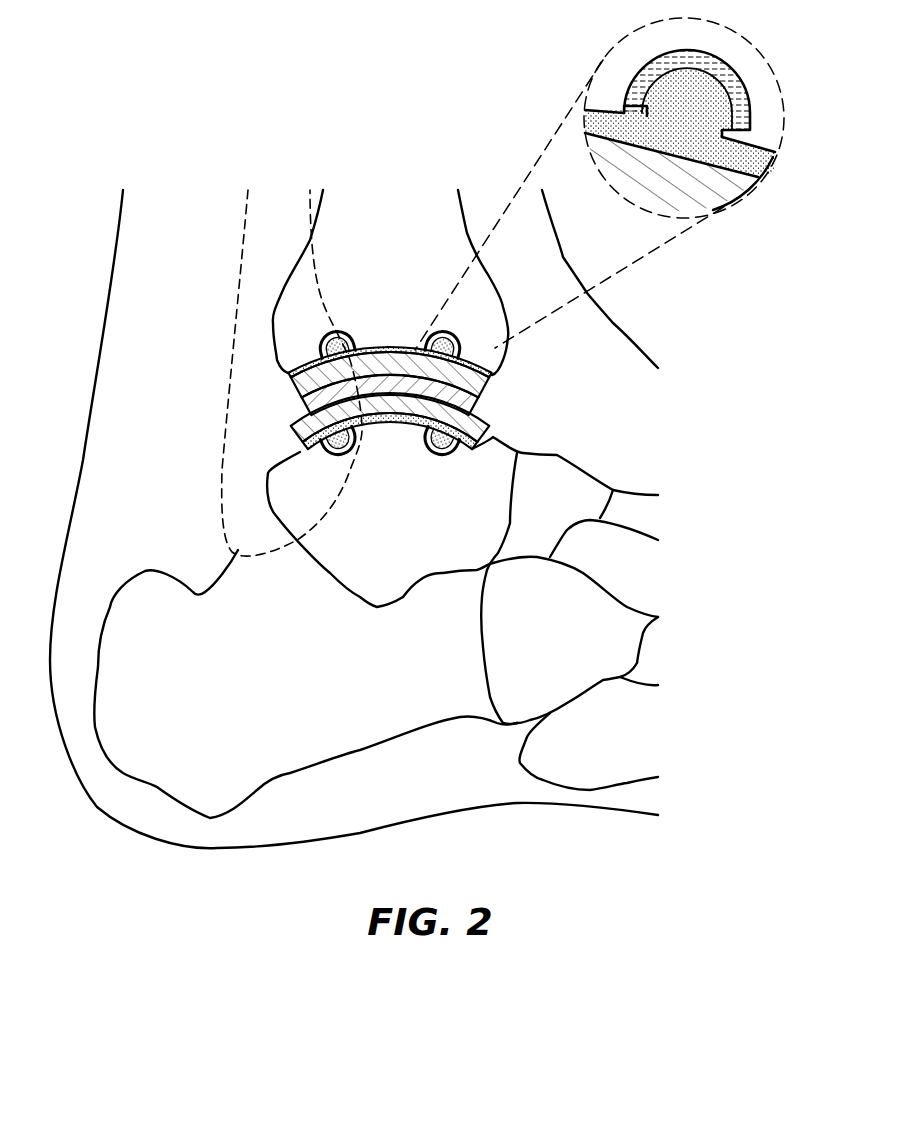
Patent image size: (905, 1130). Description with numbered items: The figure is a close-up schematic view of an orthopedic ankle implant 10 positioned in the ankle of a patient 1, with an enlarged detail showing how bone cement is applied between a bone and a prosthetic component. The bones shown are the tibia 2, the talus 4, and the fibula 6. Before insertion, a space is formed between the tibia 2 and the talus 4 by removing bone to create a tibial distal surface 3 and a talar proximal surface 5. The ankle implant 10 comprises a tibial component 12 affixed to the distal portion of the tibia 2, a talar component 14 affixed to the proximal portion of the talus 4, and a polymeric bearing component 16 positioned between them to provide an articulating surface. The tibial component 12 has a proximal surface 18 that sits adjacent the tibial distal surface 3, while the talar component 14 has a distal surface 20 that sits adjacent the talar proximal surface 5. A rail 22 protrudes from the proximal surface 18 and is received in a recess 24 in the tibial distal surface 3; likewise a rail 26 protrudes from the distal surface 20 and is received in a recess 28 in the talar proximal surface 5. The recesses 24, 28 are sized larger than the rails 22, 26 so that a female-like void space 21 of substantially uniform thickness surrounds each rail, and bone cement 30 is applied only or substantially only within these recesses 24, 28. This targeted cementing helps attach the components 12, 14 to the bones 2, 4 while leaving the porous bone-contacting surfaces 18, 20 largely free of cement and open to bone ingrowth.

The patient 1 is at (615, 321).
The tibia 2 is at (487, 290).
The tibial distal surface 3 is at (295, 388).
The talus 4 is at (505, 440).
The talar proximal surface 5 is at (472, 405).
The fibula 6 is at (246, 259).
The ankle implant 10 is at (506, 258).
The tibial component 12 is at (490, 392).
The talar component 14 is at (302, 437).
The bearing component 16 is at (300, 410).
The proximal surface 18 is at (300, 363).
The distal surface 20 is at (467, 448).
The void space 21 is at (622, 102).
The rail 22 is at (328, 341).
The recess 24 is at (340, 331).
The rail 26 is at (335, 447).
The recess 28 is at (352, 453).
The bone cement 30 is at (357, 330).